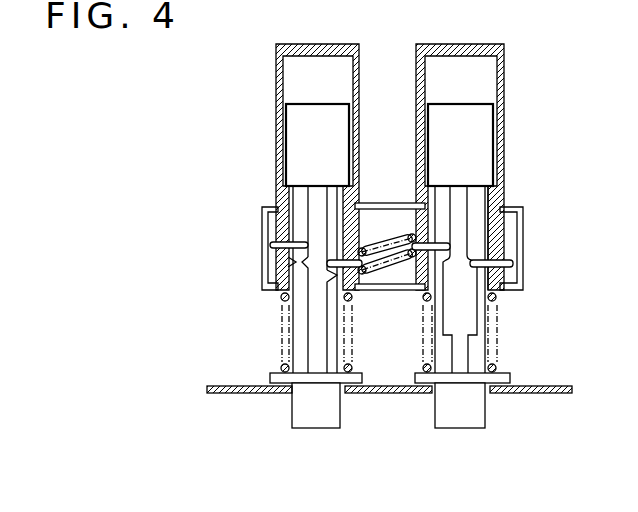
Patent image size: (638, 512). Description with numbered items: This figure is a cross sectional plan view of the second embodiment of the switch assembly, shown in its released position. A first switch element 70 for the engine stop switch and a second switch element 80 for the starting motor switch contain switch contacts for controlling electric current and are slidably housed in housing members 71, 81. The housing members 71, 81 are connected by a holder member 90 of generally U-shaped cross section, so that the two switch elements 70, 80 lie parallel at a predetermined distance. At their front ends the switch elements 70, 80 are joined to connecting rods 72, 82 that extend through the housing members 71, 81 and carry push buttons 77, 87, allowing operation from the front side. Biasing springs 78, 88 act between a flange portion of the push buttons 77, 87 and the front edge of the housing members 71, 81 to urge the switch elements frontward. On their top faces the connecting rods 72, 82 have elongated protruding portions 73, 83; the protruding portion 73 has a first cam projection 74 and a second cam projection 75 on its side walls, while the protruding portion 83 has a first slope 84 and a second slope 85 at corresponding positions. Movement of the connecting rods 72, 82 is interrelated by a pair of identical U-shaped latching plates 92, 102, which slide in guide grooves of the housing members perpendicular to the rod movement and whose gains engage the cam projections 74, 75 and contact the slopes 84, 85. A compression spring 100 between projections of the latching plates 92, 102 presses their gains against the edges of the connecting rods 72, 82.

The first switch element 70 is at (293, 115).
The housing member 71 is at (310, 45).
The connecting rod 72 is at (290, 168).
The protruding portion 73 is at (330, 168).
The first cam projection 74 is at (288, 262).
The second cam projection 75 is at (318, 274).
The push button 77 is at (317, 418).
The biasing spring 78 is at (372, 412).
The second switch element 80 is at (480, 115).
The housing member 81 is at (452, 45).
The connecting rod 82 is at (497, 165).
The protruding portion 83 is at (452, 172).
The first slope 84 is at (455, 262).
The second slope 85 is at (475, 275).
The push button 87 is at (467, 417).
The biasing spring 88 is at (425, 349).
The holder member 90 is at (270, 288).
The latching plate 92 is at (412, 238).
The compression spring 100 is at (373, 237).
The latching plate 102 is at (352, 278).